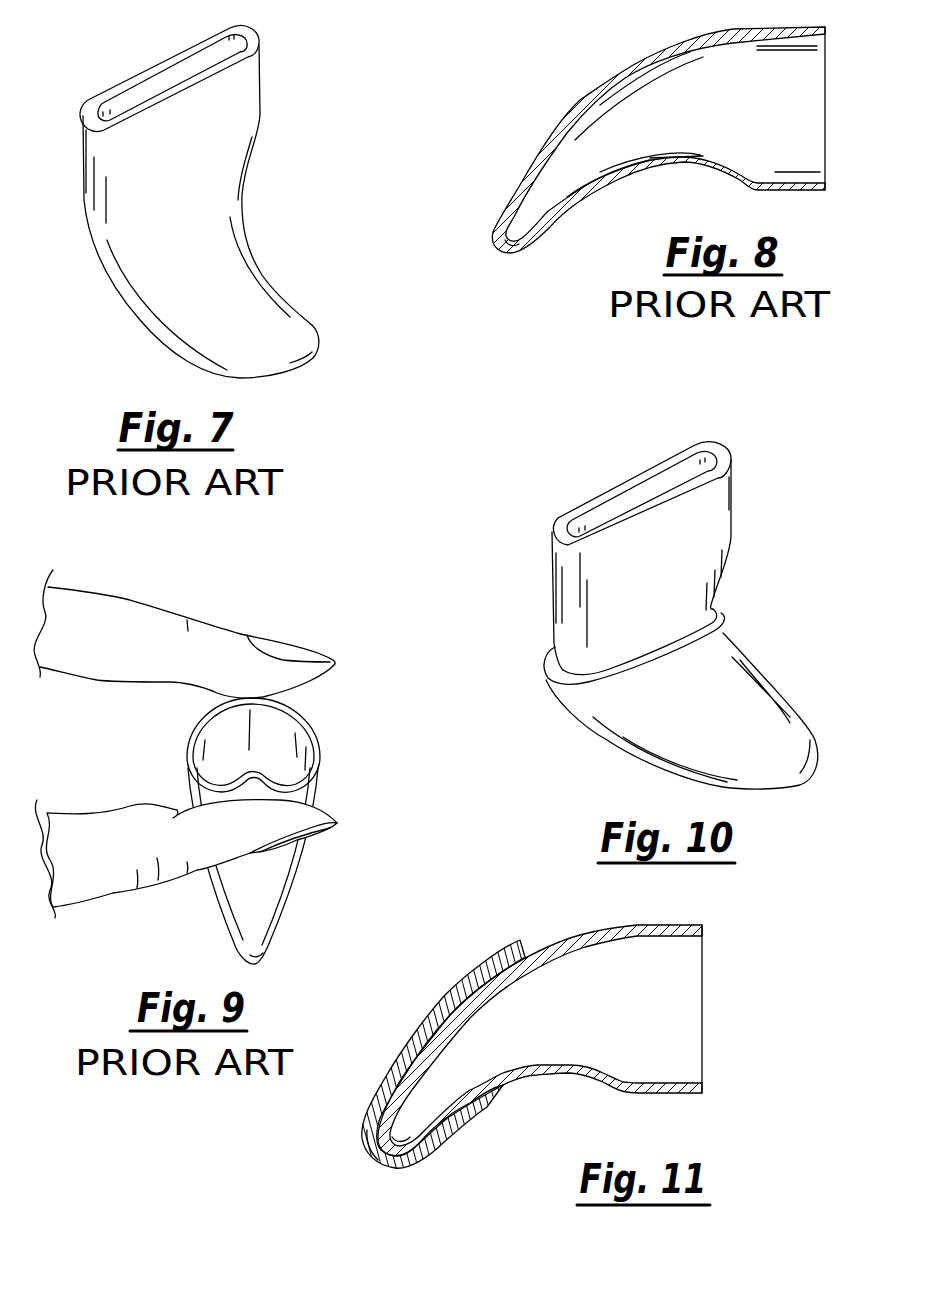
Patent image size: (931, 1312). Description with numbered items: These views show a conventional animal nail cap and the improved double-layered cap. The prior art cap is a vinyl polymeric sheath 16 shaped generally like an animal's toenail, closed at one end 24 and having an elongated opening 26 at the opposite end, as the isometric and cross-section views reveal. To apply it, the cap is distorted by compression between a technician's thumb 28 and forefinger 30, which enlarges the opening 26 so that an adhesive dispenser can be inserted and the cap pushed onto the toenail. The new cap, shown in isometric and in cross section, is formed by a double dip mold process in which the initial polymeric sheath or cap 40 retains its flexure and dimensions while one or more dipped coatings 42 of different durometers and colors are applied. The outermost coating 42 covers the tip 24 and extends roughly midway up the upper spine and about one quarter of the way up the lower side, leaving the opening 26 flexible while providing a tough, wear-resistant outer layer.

In FIG. 7, the polymeric sheath 16 is at (155, 215).
In FIG. 8, the polymeric sheath 16 is at (598, 62).
In FIG. 9, the polymeric sheath 16 is at (327, 747).
In FIG. 10, the polymeric sheath 16 is at (679, 545).
In FIG. 11, the polymeric sheath 16 is at (590, 932).
In FIG. 7, the closed end 24 is at (322, 347).
In FIG. 8, the closed end 24 is at (503, 250).
In FIG. 11, the closed end 24 is at (393, 1107).
In FIG. 7, the elongated opening 26 is at (152, 85).
In FIG. 10, the elongated opening 26 is at (633, 497).
In FIG. 9, the thumb 28 is at (98, 877).
In FIG. 9, the forefinger 30 is at (207, 640).
In FIG. 10, the polymeric sheath or cap 40 is at (666, 725).
In FIG. 11, the polymeric sheath or cap 40 is at (455, 973).
In FIG. 10, the dipped coating 42 is at (807, 722).
In FIG. 11, the dipped coating 42 is at (367, 1140).